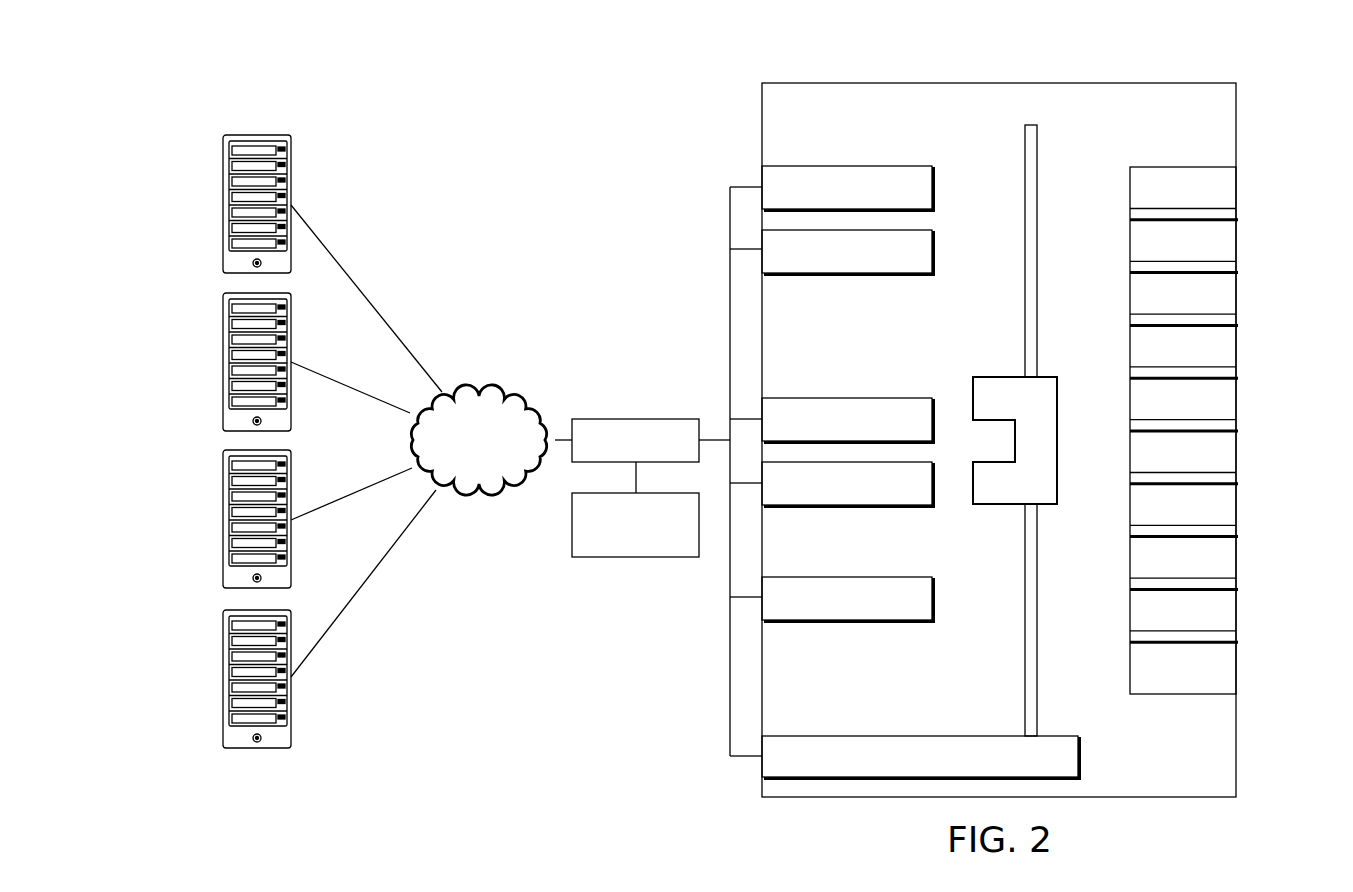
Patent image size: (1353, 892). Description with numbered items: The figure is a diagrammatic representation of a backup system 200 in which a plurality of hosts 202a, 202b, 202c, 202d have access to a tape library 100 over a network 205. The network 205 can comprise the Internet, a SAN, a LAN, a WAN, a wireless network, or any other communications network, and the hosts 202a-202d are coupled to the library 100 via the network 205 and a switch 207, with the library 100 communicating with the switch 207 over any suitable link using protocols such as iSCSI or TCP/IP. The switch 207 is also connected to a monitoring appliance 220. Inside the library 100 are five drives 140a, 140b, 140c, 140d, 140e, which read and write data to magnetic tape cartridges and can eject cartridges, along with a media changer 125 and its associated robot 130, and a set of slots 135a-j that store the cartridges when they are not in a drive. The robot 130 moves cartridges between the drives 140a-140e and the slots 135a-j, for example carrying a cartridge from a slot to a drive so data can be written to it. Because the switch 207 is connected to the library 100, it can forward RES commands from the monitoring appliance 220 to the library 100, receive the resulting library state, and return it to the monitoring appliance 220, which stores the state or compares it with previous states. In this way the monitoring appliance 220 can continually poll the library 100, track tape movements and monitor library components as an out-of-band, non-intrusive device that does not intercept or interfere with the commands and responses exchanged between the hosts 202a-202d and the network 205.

The library 100 is at (1285, 87).
The media changer 125 is at (920, 736).
The robot 130 is at (994, 377).
The slots 135a-j is at (1241, 167).
The drive 140a is at (846, 166).
The drive 140b is at (846, 274).
The drive 140c is at (846, 398).
The drive 140d is at (846, 505).
The drive 140e is at (846, 620).
The system 200 is at (400, 120).
The host 202a is at (223, 197).
The host 202b is at (223, 360).
The host 202c is at (223, 519).
The host 202d is at (223, 677).
The network 205 is at (498, 457).
The switch 207 is at (625, 419).
The monitoring appliance 220 is at (625, 557).